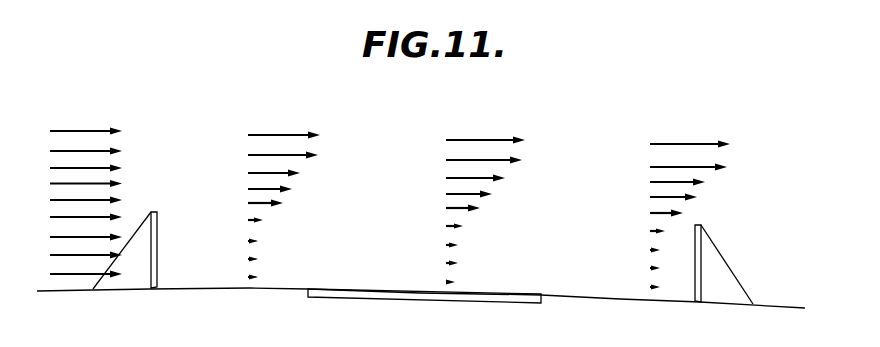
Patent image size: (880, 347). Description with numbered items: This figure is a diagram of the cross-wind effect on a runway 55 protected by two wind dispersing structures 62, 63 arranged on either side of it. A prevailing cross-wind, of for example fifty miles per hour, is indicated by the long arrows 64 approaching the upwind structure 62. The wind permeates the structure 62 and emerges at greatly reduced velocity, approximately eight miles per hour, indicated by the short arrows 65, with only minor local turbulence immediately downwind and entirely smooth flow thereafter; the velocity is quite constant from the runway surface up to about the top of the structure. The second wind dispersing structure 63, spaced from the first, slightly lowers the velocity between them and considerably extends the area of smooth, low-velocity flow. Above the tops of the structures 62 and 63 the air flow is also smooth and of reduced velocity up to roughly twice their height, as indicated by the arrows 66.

The flat plate (porous/perforated panel) in the ground surface 55 is at (405, 301).
The wind dispersing structure 62 is at (158, 268).
The second wind dispersing structure 63 is at (694, 283).
The arrows 64 is at (67, 217).
The short arrows 65 is at (264, 214).
The arrows 66 is at (322, 129).